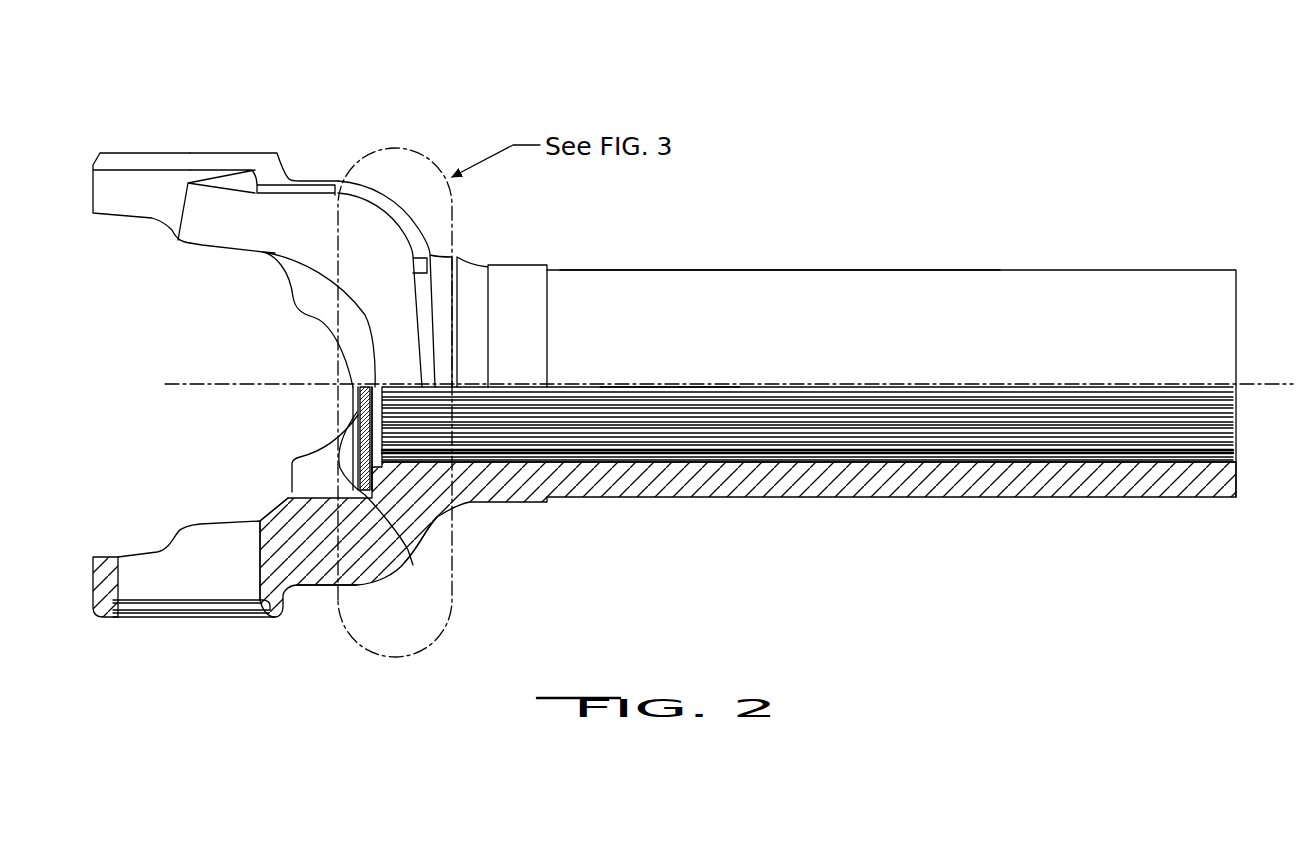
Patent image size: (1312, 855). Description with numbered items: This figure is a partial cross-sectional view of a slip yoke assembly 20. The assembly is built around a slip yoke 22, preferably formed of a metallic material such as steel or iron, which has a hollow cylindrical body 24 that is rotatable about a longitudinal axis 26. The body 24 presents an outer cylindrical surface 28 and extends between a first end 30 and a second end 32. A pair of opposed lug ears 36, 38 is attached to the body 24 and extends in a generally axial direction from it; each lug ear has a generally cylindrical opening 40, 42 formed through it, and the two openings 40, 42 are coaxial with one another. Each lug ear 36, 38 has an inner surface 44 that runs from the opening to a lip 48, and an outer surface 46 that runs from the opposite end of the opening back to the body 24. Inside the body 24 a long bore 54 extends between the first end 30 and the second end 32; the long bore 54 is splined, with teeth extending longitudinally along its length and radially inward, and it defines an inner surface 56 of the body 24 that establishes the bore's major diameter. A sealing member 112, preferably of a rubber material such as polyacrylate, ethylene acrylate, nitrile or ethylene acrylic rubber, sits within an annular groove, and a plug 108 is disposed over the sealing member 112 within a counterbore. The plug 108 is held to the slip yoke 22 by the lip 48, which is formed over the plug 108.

The slip yoke assembly 20 is at (675, 212).
The slip yoke 22 is at (1110, 270).
The hollow cylindrical body 24 is at (1124, 482).
The longitudinal axis 26 is at (1267, 384).
The outer cylindrical surface 28 is at (760, 282).
The first end 30 is at (1237, 462).
The second end 32 is at (380, 468).
The lug ear 36 is at (255, 153).
The lug ear 38 is at (280, 617).
The cylindrical opening 40 is at (152, 153).
The cylindrical opening 42 is at (170, 618).
The inner surface 44 is at (277, 508).
The outer surface 46 is at (312, 587).
The lip 48 is at (362, 487).
The long bore 54 is at (1237, 410).
The inner surface 56 is at (653, 455).
The plug 108 is at (358, 423).
The sealing member 112 is at (388, 505).